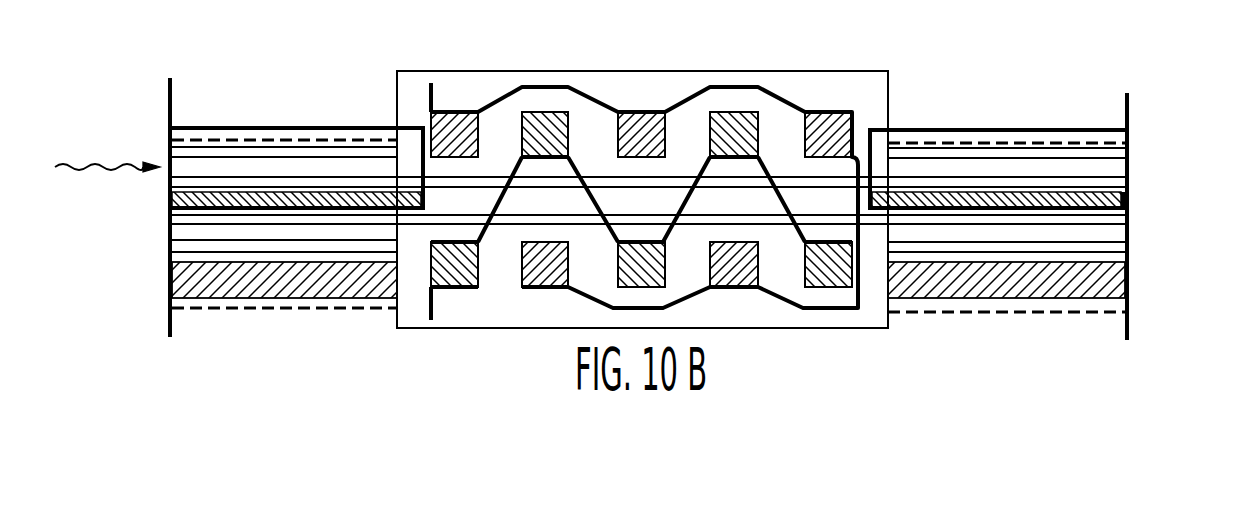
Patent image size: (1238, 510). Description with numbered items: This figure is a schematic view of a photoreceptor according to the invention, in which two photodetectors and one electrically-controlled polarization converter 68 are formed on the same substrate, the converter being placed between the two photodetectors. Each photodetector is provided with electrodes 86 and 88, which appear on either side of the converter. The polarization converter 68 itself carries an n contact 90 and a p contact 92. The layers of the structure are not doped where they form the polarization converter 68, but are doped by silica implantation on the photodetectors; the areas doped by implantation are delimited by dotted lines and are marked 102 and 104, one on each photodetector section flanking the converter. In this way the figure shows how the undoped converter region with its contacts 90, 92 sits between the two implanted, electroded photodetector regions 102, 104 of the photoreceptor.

The polarization converter 68 is at (642, 200).
The electrode 86 is at (172, 203).
The electrode 88 is at (183, 285).
The contact n 90 is at (433, 92).
The contact p 92 is at (433, 302).
The area doped by implantation 102 is at (258, 140).
The area doped by implantation 104 is at (1018, 143).